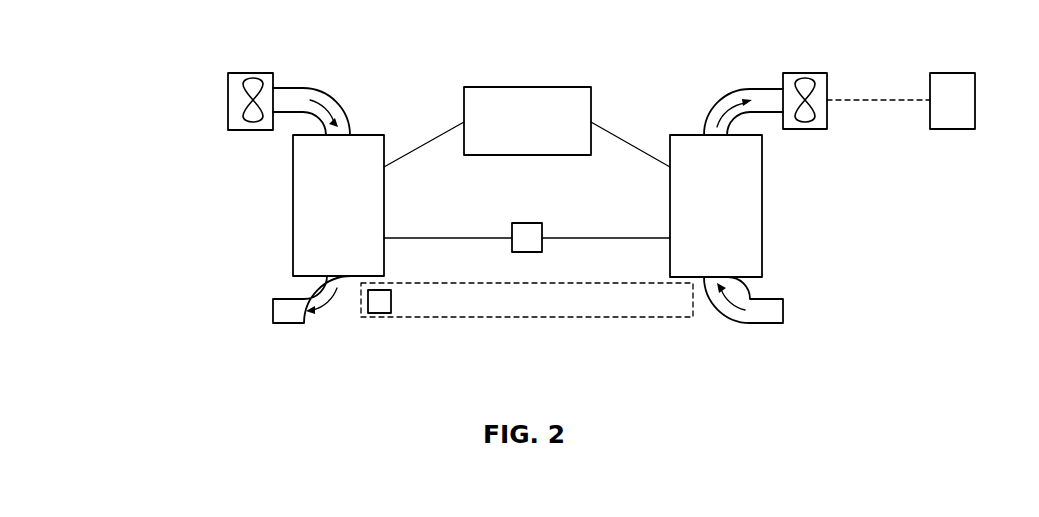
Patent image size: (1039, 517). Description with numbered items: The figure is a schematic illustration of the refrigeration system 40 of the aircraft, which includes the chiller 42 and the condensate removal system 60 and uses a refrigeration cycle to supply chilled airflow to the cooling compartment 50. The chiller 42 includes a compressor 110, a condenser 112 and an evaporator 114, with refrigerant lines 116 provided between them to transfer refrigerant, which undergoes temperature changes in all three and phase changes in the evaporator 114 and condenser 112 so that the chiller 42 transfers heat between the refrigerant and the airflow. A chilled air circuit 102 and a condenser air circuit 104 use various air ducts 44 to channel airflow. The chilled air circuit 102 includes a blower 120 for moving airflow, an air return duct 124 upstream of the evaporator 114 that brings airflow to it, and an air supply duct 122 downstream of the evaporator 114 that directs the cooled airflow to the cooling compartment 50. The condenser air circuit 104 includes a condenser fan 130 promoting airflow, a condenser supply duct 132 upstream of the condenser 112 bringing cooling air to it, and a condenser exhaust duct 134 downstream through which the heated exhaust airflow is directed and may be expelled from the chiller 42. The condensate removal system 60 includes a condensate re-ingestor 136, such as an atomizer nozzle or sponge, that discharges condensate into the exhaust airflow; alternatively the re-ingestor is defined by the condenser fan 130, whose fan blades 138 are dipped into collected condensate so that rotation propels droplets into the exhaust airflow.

The refrigeration system 40 is at (227, 67).
The chiller 42 is at (662, 59).
The air ducts 44 is at (303, 88).
The cooling compartment 50 is at (952, 130).
The condensate removal system 60 is at (527, 318).
The chilled air circuit 102 is at (770, 86).
The condenser air circuit 104 is at (288, 84).
The compressor 110 is at (527, 87).
The condenser 112 is at (293, 205).
The evaporator 114 is at (762, 205).
The refrigerant lines 116 is at (442, 132).
The blower 120 is at (830, 90).
The air supply duct 122 is at (735, 320).
The air return duct 124 is at (730, 92).
The condenser fan 130 is at (250, 130).
The condenser supply duct 132 is at (335, 98).
The condenser exhaust duct 134 is at (328, 318).
The condensate re-ingestor 136 is at (378, 313).
The fan blades 138 is at (243, 112).